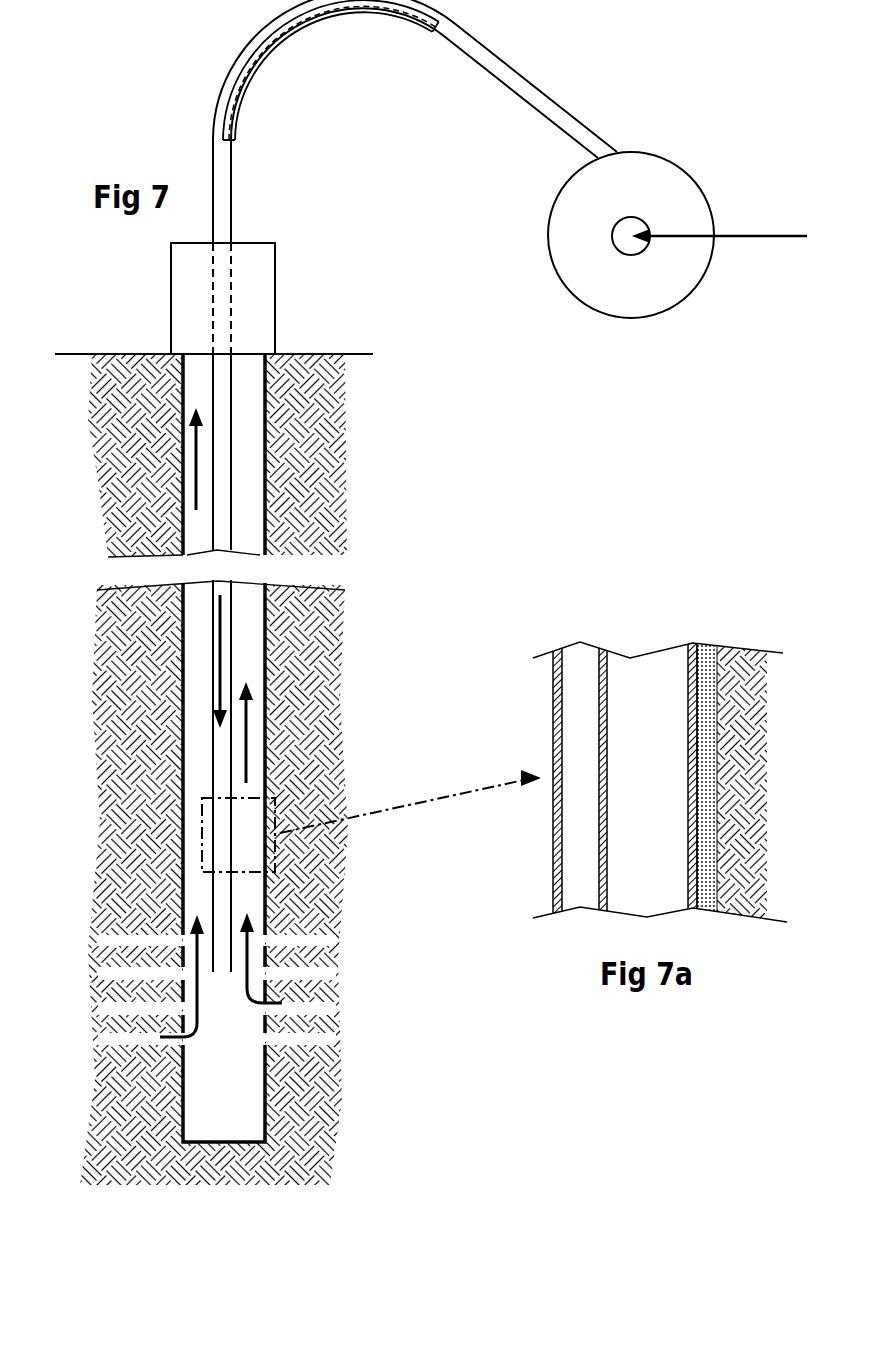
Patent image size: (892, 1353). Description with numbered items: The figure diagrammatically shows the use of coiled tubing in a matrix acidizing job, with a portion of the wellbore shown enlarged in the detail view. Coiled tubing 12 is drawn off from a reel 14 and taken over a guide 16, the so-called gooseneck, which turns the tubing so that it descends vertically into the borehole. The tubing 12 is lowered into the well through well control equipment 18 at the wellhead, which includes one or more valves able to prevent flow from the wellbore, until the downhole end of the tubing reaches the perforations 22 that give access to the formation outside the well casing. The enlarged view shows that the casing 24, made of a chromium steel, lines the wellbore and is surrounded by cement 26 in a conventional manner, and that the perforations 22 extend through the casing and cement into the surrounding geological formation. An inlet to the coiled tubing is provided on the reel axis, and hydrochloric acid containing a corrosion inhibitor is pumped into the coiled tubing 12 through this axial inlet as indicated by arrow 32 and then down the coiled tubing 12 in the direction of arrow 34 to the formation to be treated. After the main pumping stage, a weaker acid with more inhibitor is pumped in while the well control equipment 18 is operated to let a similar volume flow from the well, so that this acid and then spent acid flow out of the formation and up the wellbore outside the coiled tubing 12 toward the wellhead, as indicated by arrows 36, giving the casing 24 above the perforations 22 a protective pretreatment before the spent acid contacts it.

In FIG. 7, the coiled tubing 12 is at (513, 95).
In FIG. 7A, the coiled tubing 12 is at (607, 840).
In FIG. 7, the reel 14 is at (662, 170).
In FIG. 7, the guide 16 is at (257, 65).
In FIG. 7, the well control equipment 18 is at (263, 267).
In FIG. 7, the perforations 22 is at (172, 936).
In FIG. 7A, the casing 24 is at (692, 755).
In FIG. 7A, the cement 26 is at (705, 680).
In FIG. 7, the arrow 32 is at (762, 238).
In FIG. 7, the arrow 34 is at (222, 640).
In FIG. 7, the arrows 36 is at (189, 462).